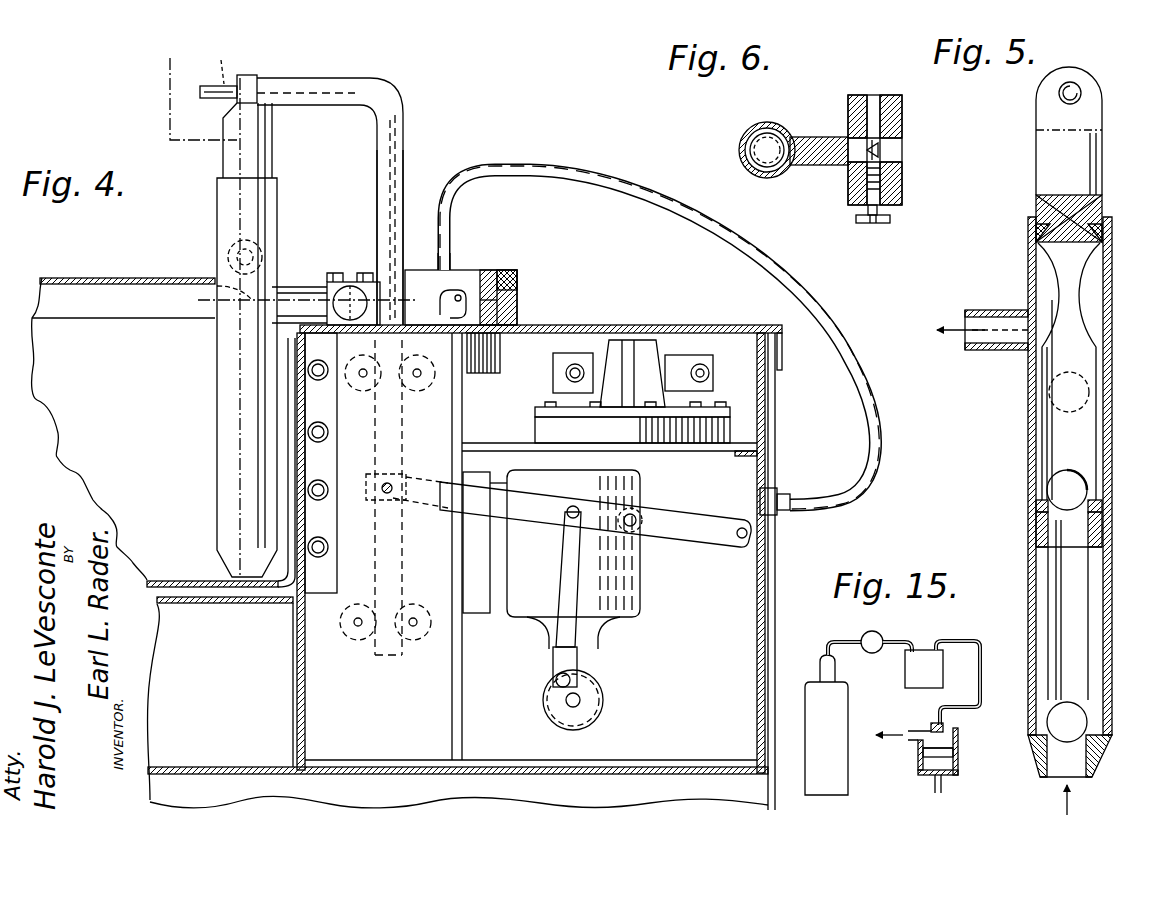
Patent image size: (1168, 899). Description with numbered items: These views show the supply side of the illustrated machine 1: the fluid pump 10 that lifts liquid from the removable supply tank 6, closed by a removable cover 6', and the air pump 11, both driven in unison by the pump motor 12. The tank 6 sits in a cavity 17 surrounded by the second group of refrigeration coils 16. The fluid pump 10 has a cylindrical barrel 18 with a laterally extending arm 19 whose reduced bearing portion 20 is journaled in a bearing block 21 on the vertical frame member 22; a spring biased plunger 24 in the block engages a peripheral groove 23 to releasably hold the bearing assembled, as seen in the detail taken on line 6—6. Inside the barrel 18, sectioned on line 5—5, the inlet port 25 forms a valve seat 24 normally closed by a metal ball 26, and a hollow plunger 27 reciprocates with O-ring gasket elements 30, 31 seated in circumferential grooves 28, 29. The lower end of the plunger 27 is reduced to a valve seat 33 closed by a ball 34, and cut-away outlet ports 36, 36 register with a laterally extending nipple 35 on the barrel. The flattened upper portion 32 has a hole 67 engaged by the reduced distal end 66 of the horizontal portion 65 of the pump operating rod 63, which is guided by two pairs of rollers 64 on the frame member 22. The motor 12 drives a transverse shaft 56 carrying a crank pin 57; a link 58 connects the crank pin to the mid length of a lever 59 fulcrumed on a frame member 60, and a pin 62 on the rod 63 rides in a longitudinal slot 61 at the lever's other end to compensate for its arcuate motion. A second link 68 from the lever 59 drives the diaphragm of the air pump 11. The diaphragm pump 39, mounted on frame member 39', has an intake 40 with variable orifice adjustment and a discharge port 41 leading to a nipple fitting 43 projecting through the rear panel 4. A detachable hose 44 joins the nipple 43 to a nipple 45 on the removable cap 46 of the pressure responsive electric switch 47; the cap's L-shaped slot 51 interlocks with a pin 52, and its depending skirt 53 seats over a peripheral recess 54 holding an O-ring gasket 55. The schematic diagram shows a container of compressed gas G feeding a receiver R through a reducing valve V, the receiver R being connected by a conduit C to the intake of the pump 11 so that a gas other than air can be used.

In FIG. 4, the powder dispensing apparatus 1 is at (780, 617).
In FIG. 4, the rear panel 4 is at (770, 573).
In FIG. 4, the section line 5— 5 is at (182, 58).
In FIG. 4, the supply tank 6 is at (292, 461).
In FIG. 4, the removable cover 6' is at (101, 256).
In FIG. 4, the fluid pump 10 is at (214, 428).
In FIG. 6, the fluid pump 10 is at (745, 170).
In FIG. 5, the fluid pump 10 is at (1026, 445).
In FIG. 4, the air pump 11 is at (745, 438).
In FIG. 15, the air pump 11 is at (918, 754).
In FIG. 4, the pump motor 12 is at (642, 575).
In FIG. 4, the second group of coils 16 is at (330, 484).
In FIG. 4, the cavity 17 is at (272, 597).
In FIG. 4, the cylindrical barrel 18 is at (274, 222).
In FIG. 6, the cylindrical barrel 18 is at (740, 142).
In FIG. 5, the cylindrical barrel 18 is at (1112, 456).
In FIG. 4, the laterally extending arm 19 is at (293, 292).
In FIG. 6, the laterally extending arm 19 is at (815, 137).
In FIG. 5, the laterally extending arm 19 is at (1092, 402).
In FIG. 6, the bearing portion 20 is at (905, 150).
In FIG. 4, the bearing block 21 is at (311, 280).
In FIG. 6, the bearing block 21 is at (900, 100).
In FIG. 4, the frame member 22 is at (445, 688).
In FIG. 6, the peripheral groove 23 is at (882, 137).
In FIG. 4, the spring biased plunger 24 is at (353, 286).
In FIG. 6, the spring biased plunger 24 is at (872, 224).
In FIG. 5, the spring biased plunger 24 is at (1038, 748).
In FIG. 5, the inlet port 25 is at (1082, 778).
In FIG. 5, the metal ball 26 is at (1087, 714).
In FIG. 4, the hollow plunger 27 is at (273, 157).
In FIG. 5, the hollow plunger 27 is at (1100, 165).
In FIG. 5, the circumferential groove 28 is at (1090, 228).
In FIG. 5, the circumferential groove 29 is at (1077, 530).
In FIG. 5, the O-ring gasket element 30 is at (1103, 228).
In FIG. 5, the O-ring gasket element 31 is at (1038, 530).
In FIG. 4, the flattened portion 32 is at (258, 80).
In FIG. 5, the flattened portion 32 is at (1104, 112).
In FIG. 5, the valve seat 33 is at (1040, 508).
In FIG. 5, the ball 34 is at (1056, 482).
In FIG. 4, the nipple 35 is at (226, 258).
In FIG. 5, the nipple 35 is at (1000, 351).
In FIG. 5, the outlet ports 36 is at (1050, 283).
In FIG. 4, the diaphragm pump 39 is at (610, 422).
In FIG. 4, the frame member 39' is at (609, 461).
In FIG. 4, the intake 40 is at (706, 375).
In FIG. 4, the discharge port 41 is at (603, 340).
In FIG. 4, the nipple fitting 43 is at (778, 492).
In FIG. 4, the detachable hose 44 is at (868, 427).
In FIG. 4, the nipple 45 is at (478, 249).
In FIG. 4, the removable cap element 46 is at (490, 275).
In FIG. 4, the pressure responsive electric switch 47 is at (491, 373).
In FIG. 4, the L-shaped slot 51 is at (461, 295).
In FIG. 4, the pin 52 is at (468, 290).
In FIG. 4, the depending skirt portion 53 is at (518, 305).
In FIG. 4, the peripheral recess 54 is at (518, 305).
In FIG. 4, the O-ring gasket 55 is at (517, 280).
In FIG. 4, the transverse shaft 56 is at (581, 700).
In FIG. 4, the crank pin 57 is at (590, 718).
In FIG. 4, the link 58 is at (578, 632).
In FIG. 4, the lever 59 is at (547, 520).
In FIG. 4, the frame member 60 is at (730, 610).
In FIG. 4, the longitudinal slot 61 is at (410, 512).
In FIG. 4, the pin 62 is at (402, 479).
In FIG. 4, the pump operating rod 63 is at (405, 148).
In FIG. 4, the rollers 64 is at (378, 509).
In FIG. 4, the horizontal portion 65 is at (335, 80).
In FIG. 4, the distal end 66 is at (214, 101).
In FIG. 4, the hole 67 is at (219, 59).
In FIG. 5, the hole 67 is at (1081, 97).
In FIG. 4, the second link 68 is at (642, 518).
In FIG. 15, the reducing valve V is at (876, 631).
In FIG. 15, the conduit C is at (982, 641).
In FIG. 15, the receiver R is at (922, 686).
In FIG. 15, the container of compressed gas G is at (838, 784).